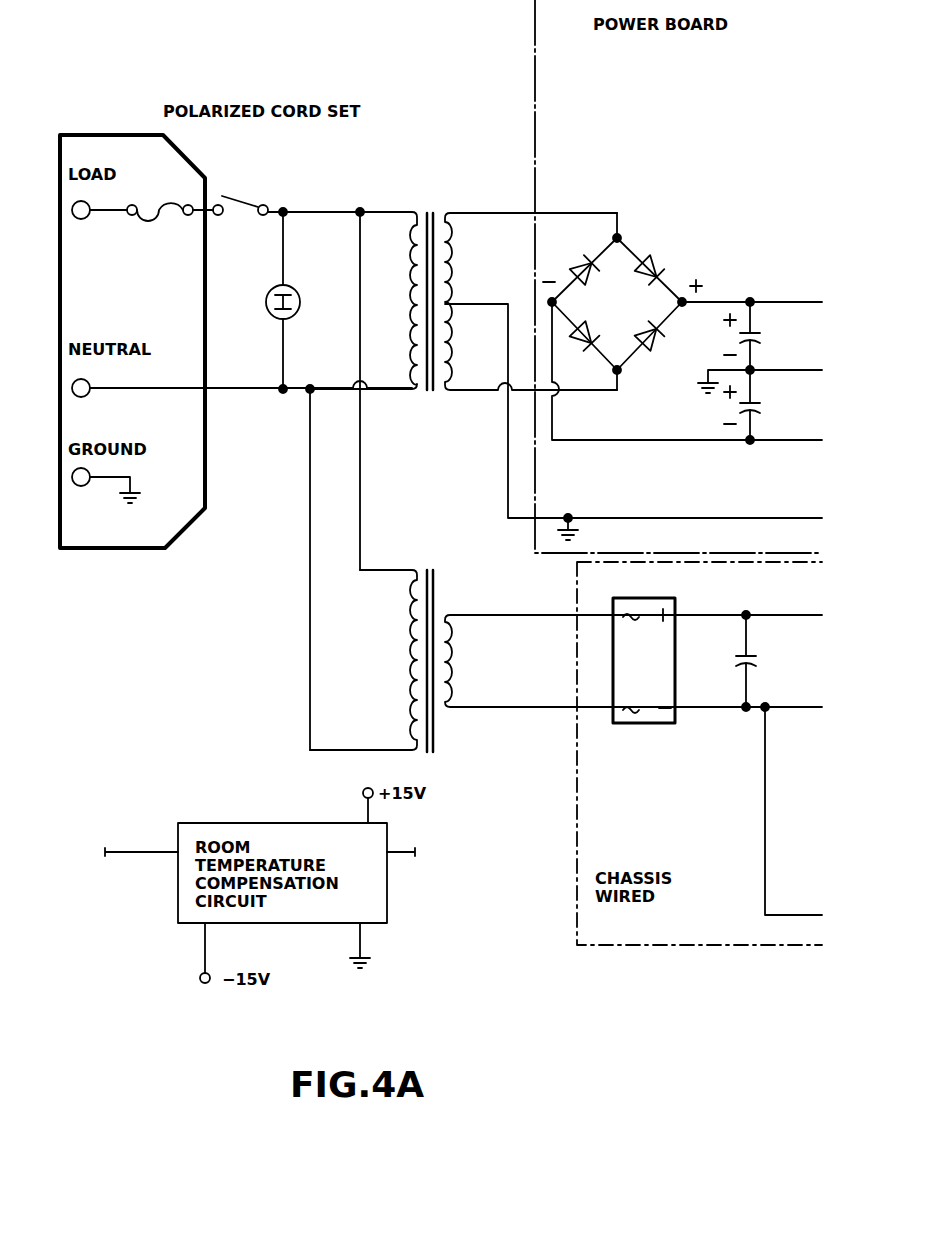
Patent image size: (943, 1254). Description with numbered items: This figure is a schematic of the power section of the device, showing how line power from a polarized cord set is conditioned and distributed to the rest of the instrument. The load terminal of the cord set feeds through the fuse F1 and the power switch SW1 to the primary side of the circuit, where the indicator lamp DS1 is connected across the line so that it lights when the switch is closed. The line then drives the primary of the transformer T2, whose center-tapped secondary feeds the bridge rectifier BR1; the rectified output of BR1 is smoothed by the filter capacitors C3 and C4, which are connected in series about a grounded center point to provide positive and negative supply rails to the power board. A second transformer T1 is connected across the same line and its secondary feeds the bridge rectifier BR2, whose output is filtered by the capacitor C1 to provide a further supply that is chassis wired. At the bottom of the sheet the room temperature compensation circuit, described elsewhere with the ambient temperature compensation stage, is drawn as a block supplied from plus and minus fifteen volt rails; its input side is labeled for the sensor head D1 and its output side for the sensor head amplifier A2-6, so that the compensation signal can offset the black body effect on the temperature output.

The fuse F1 is at (151, 197).
The power switch SW1 is at (248, 192).
The indicator lamp DS1 is at (269, 300).
The transformer Stancor TP4 T2 is at (566, 339).
The bridge rectifier MDA 920-4 BR1 is at (682, 306).
The filter capacitor C3 is at (756, 336).
The filter capacitor C4 is at (756, 405).
The transformer Triad F95X T1 is at (461, 635).
The bridge rectifier MDA 980-1 BR2 is at (637, 643).
The filter capacitor C1 is at (763, 661).
The sensor head diode D1 is at (115, 864).
The sensor head amplifier A2-6 is at (457, 868).